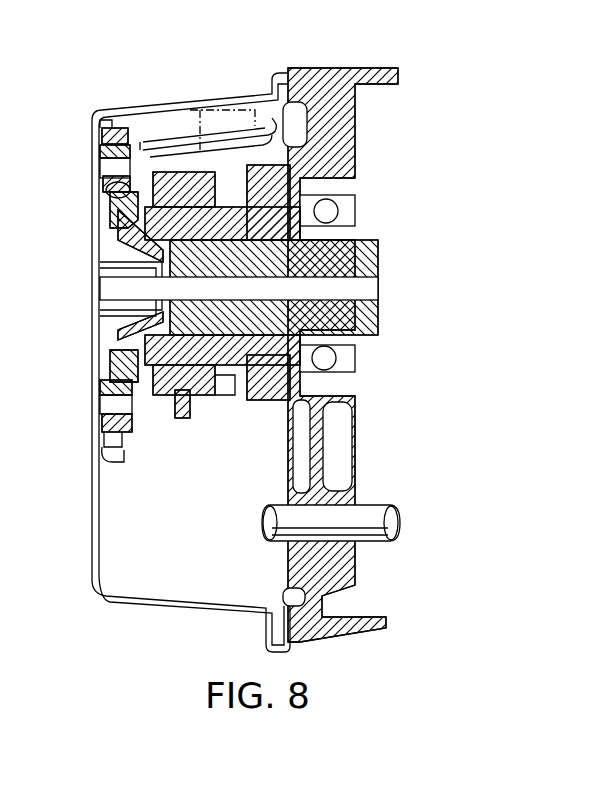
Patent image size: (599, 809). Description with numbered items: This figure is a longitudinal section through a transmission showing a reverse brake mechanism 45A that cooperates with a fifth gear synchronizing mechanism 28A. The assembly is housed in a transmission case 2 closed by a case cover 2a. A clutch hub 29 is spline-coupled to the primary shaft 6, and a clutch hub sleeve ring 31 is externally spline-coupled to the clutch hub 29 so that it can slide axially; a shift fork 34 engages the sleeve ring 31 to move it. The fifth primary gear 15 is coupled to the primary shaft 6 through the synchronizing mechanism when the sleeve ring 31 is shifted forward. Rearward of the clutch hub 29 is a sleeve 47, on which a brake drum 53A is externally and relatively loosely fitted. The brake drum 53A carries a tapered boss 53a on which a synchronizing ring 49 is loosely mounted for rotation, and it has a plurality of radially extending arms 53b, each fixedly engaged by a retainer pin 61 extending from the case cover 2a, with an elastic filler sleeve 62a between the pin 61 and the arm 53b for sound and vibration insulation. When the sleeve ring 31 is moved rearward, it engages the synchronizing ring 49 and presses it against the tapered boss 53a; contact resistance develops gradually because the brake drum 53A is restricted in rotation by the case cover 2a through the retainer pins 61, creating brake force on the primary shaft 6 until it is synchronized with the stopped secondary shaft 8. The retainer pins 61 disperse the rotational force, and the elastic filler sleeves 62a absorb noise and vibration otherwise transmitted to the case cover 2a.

The transmission case 2 is at (312, 68).
The case cover 2a is at (93, 528).
The primary shaft 6 is at (378, 268).
The secondary shaft 8 is at (392, 518).
The fifth primary gear 15 is at (262, 405).
The fifth gear synchronizing mechanism 28A is at (200, 155).
The clutch hub 29 is at (186, 277).
The clutch hub sleeve ring 31 is at (210, 400).
The shift fork 34 is at (182, 420).
The reverse brake mechanism 45A is at (150, 150).
The sleeve 47 is at (130, 246).
The synchronizing ring 49 is at (114, 197).
The tapered boss 53a is at (118, 208).
The brake drum 53A is at (110, 362).
The radial arms 53b is at (116, 172).
The retainer pin 61 is at (110, 118).
The elastic filler sleeve 62a is at (104, 455).